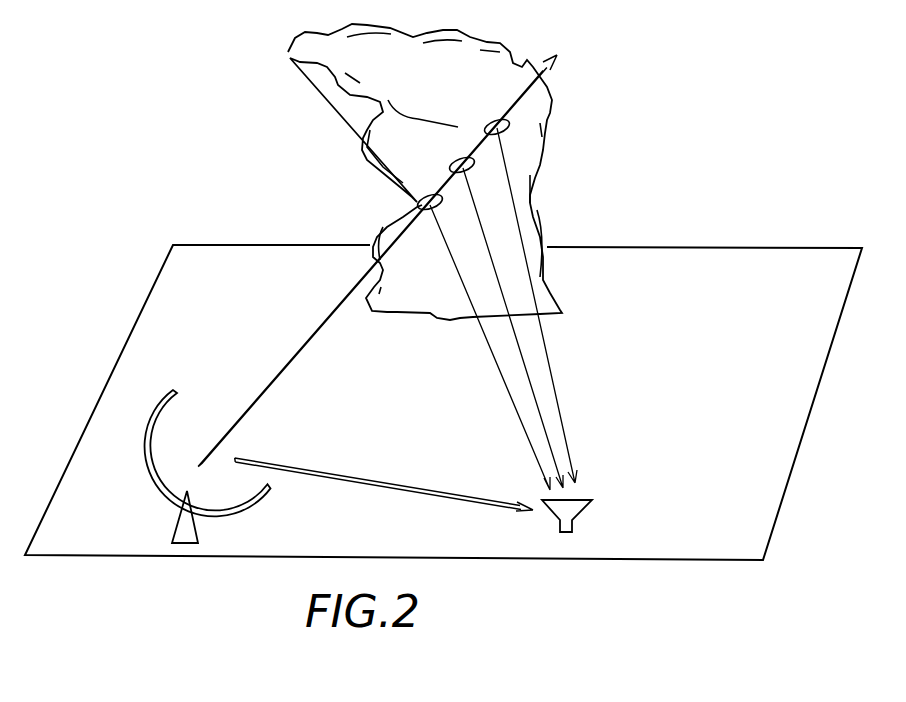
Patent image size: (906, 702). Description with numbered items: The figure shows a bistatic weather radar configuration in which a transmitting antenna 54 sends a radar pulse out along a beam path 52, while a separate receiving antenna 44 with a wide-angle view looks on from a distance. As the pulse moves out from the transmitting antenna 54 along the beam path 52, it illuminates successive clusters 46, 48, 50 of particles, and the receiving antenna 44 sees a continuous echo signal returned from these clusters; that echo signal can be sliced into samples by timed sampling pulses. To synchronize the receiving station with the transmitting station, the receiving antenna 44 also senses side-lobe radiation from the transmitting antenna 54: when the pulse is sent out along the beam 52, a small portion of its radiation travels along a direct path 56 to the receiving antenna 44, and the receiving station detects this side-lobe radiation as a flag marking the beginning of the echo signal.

The receiving antenna 44 is at (577, 510).
The cluster of particles 46 is at (417, 202).
The cluster of particles 48 is at (460, 160).
The cluster of particles 50 is at (488, 122).
The beam path 52 is at (300, 348).
The transmitting antenna 54 is at (167, 465).
The direct path 56 is at (352, 480).